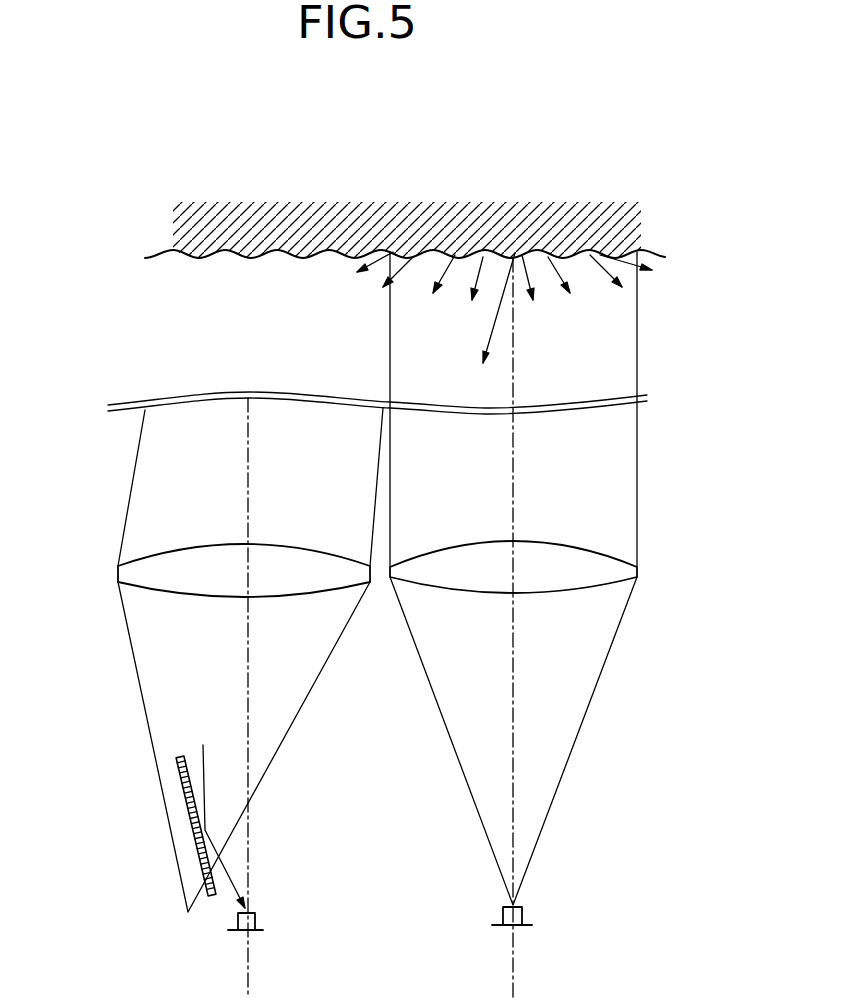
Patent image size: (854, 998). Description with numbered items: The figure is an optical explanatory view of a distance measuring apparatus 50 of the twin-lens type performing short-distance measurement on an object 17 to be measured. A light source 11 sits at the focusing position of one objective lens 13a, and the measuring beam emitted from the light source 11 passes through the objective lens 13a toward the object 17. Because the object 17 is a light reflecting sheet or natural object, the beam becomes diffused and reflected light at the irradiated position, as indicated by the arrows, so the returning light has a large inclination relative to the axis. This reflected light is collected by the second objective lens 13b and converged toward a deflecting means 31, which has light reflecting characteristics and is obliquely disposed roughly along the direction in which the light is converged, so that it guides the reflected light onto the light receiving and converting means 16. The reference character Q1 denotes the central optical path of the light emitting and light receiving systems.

The object to be measured 17 is at (627, 222).
The distance measuring apparatus 50 is at (672, 467).
The objective lens 13a is at (627, 563).
The objective lens 13b is at (127, 572).
The deflecting means 31 is at (180, 777).
The light receiving and converting means 16 is at (257, 920).
The light source 11 is at (524, 915).
The central optical path Q1 is at (250, 823).